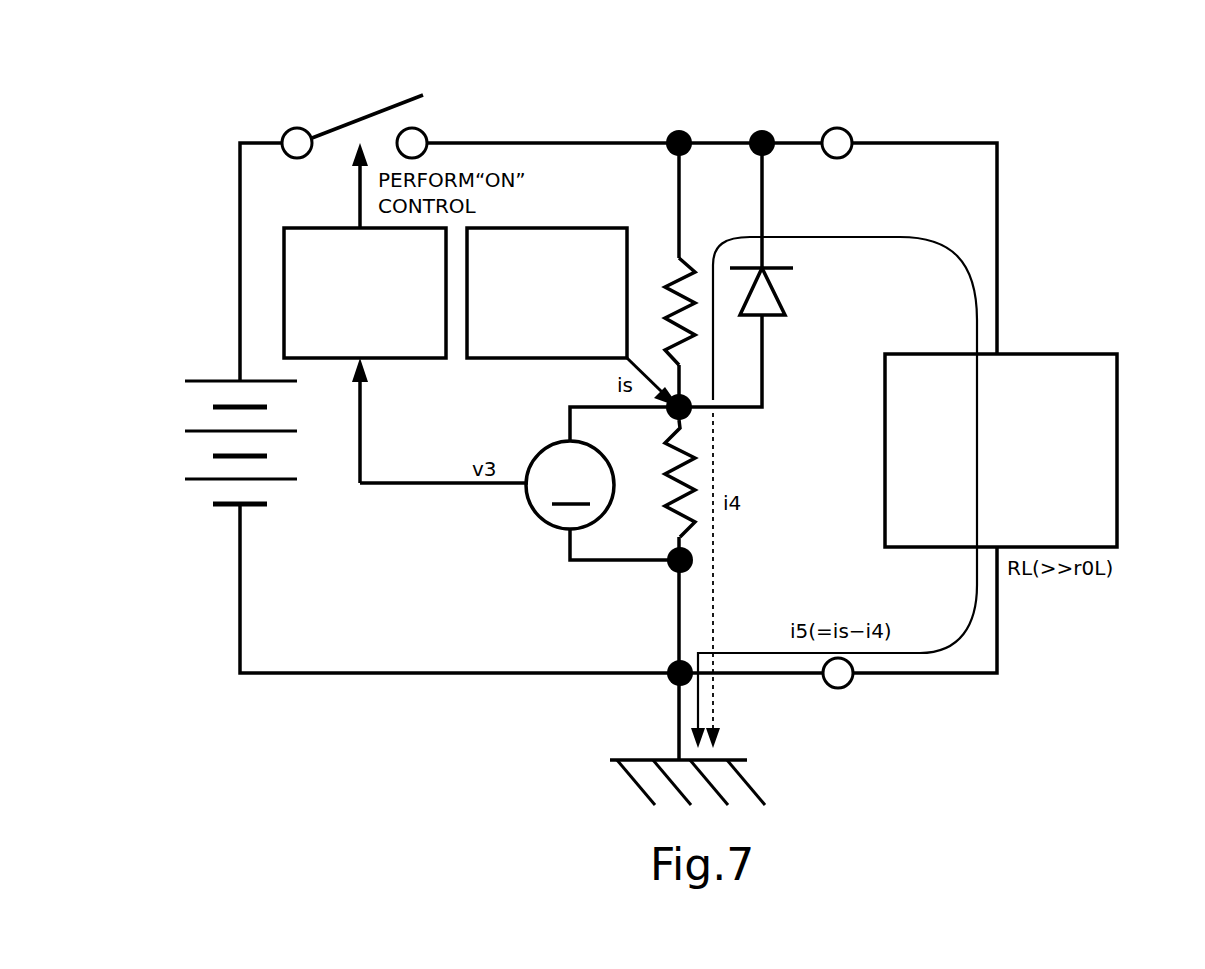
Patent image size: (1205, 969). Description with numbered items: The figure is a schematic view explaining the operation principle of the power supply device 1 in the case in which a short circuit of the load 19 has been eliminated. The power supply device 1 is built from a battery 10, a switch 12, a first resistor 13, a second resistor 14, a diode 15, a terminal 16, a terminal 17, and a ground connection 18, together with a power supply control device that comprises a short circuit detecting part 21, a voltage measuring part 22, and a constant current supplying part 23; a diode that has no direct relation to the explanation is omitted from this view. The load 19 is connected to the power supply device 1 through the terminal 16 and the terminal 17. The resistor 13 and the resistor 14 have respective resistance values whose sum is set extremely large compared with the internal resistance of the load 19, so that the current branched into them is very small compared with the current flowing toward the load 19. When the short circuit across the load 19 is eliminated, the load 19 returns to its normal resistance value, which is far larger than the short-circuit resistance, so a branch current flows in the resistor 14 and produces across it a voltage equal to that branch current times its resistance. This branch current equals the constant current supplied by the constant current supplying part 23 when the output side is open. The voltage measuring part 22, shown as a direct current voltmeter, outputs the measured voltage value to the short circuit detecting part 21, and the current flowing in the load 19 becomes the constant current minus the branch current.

The power supply device 1 is at (1007, 122).
The battery 10 is at (220, 380).
The switch 12 is at (347, 124).
The resistor 13 is at (697, 353).
The resistor 14 is at (697, 458).
The diode 15 is at (780, 303).
The terminal 16 is at (840, 127).
The terminal 17 is at (838, 688).
The ground connection 18 is at (740, 760).
The load 19 is at (885, 472).
The short circuit detecting part 21 is at (323, 228).
The voltage measuring part 22 is at (541, 443).
The constant current supplying part 23 is at (572, 228).